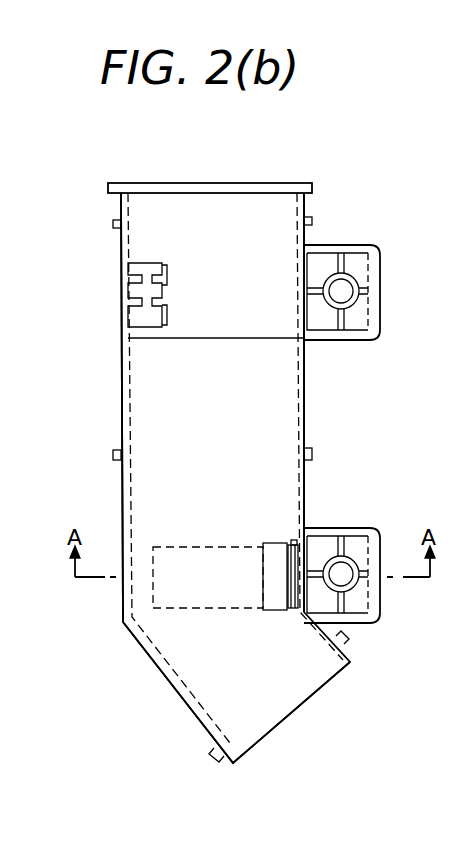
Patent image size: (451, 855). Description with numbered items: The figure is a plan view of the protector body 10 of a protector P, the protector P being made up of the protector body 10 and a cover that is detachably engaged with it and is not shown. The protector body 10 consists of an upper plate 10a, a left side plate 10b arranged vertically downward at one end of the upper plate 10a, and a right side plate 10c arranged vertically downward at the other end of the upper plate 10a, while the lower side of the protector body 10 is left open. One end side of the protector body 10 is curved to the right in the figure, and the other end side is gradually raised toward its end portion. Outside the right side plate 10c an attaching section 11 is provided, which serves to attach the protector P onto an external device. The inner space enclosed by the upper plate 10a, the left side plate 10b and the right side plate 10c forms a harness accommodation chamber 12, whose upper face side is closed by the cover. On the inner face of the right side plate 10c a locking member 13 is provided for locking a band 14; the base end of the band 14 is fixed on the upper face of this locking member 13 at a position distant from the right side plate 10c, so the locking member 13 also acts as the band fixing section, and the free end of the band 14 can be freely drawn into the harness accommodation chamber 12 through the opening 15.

The protector P is at (97, 213).
The protector body 10 is at (121, 362).
The upper plate 10a is at (280, 416).
The left side plate 10b is at (121, 413).
The right side plate 10c is at (305, 483).
The attaching section 11 is at (340, 291).
The harness accommodation chamber 12 is at (265, 695).
The locking member 13 is at (281, 562).
The band 14 is at (283, 610).
The opening 15 is at (262, 601).